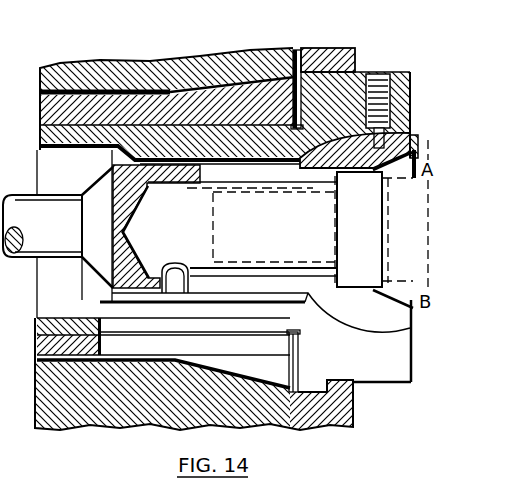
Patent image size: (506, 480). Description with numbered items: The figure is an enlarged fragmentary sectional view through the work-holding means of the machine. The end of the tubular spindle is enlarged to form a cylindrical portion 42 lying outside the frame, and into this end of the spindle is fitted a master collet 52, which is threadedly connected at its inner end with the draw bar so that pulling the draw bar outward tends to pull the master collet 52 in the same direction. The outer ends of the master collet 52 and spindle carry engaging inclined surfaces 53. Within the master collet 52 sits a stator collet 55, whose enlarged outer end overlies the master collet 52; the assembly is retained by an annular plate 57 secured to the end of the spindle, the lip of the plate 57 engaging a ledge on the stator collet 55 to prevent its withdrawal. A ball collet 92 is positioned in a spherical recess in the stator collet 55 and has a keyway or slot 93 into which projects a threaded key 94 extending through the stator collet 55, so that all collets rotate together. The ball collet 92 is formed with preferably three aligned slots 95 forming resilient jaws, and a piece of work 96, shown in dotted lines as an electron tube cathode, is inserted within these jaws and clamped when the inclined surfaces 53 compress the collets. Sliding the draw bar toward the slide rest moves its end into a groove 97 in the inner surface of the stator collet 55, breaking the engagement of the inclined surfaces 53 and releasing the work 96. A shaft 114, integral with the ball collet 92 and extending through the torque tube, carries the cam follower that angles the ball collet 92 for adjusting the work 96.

The cylindrical portion 42 is at (183, 62).
The master collet 52 is at (255, 95).
The inclined surfaces 53 is at (271, 80).
The groove 97 is at (302, 87).
The annular plate 57 is at (349, 50).
The stator collet 55 is at (356, 82).
The threaded key 94 is at (380, 83).
The keyway or slot 93 is at (412, 133).
The piece of work 96 is at (416, 148).
The ball collet 92 is at (360, 162).
The shaft 114 is at (32, 238).
The slots 95 is at (398, 317).